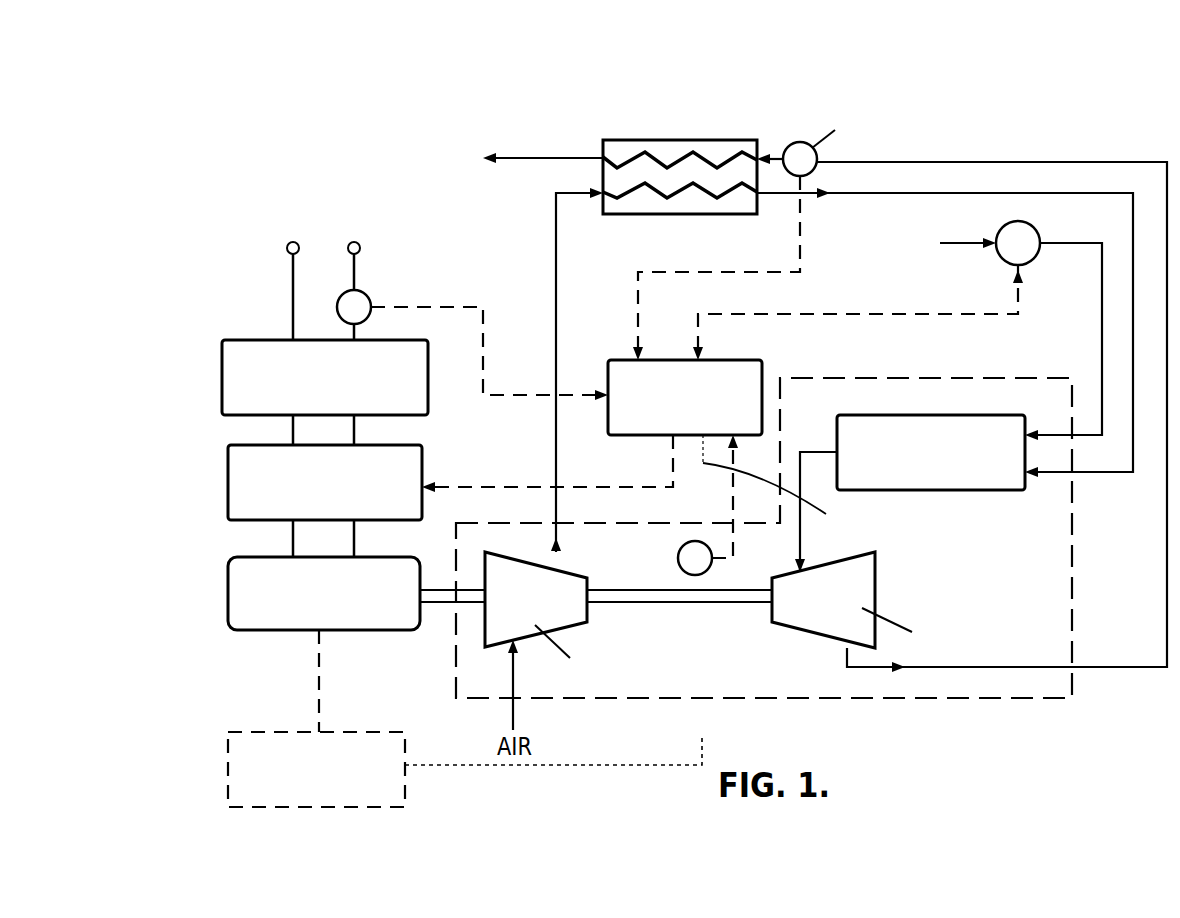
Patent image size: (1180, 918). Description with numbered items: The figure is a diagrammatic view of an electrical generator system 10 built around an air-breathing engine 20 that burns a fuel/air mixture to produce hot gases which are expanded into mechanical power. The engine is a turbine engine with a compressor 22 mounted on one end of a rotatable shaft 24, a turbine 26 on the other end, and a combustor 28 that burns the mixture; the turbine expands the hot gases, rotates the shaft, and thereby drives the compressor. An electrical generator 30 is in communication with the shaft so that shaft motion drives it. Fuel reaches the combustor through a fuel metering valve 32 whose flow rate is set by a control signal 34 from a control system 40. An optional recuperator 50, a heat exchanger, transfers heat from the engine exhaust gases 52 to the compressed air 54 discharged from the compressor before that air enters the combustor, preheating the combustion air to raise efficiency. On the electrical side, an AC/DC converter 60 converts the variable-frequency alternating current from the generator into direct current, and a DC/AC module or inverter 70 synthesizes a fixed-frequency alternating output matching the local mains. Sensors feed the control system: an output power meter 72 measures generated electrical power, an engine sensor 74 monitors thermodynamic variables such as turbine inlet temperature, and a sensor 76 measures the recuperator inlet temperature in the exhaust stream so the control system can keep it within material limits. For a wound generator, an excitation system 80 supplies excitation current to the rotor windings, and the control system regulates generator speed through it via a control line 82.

The electrical generator system 10 is at (1101, 106).
The air-breathing engine 20 is at (1073, 540).
The compressor 22 is at (490, 638).
The rotatable shaft 24 is at (615, 600).
The turbine 26 is at (862, 572).
The combustor 28 is at (925, 478).
The electrical generator 30 is at (305, 632).
The fuel metering valve 32 is at (1032, 230).
The control signal 34 is at (965, 316).
The control system 40 is at (760, 372).
The recuperator 50 is at (612, 148).
The engine exhaust gases 52 is at (907, 162).
The compressed air 54 is at (557, 226).
The AC/DC converter 60 is at (410, 450).
The DC/AC module or inverter 70 is at (247, 350).
The output power meter 72 is at (365, 296).
The engine sensor 74 is at (678, 557).
The recuperator inlet temperature sensor 76 is at (800, 142).
The excitation system 80 is at (242, 742).
The control line 82 is at (428, 718).